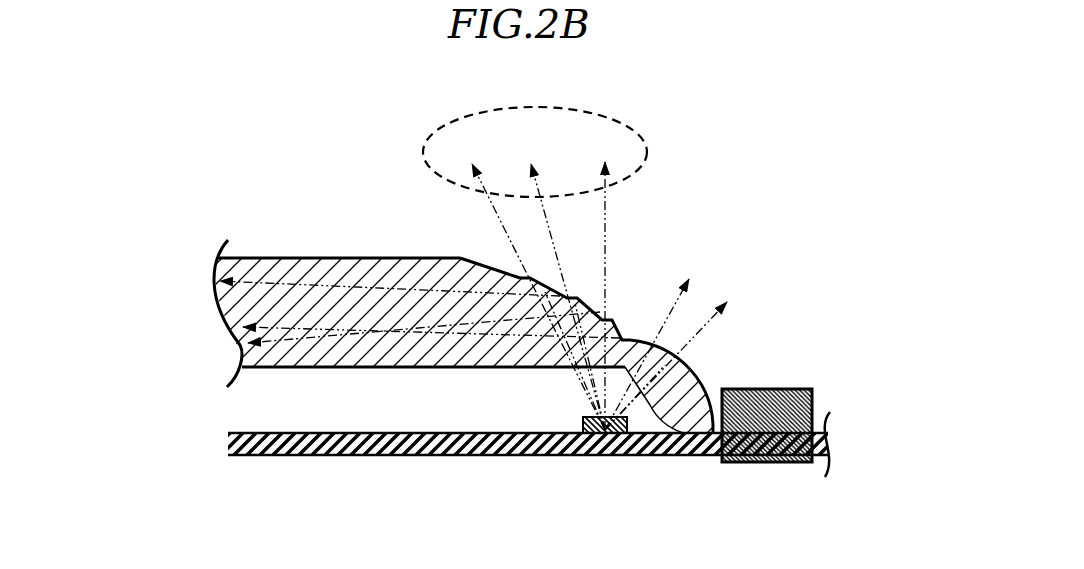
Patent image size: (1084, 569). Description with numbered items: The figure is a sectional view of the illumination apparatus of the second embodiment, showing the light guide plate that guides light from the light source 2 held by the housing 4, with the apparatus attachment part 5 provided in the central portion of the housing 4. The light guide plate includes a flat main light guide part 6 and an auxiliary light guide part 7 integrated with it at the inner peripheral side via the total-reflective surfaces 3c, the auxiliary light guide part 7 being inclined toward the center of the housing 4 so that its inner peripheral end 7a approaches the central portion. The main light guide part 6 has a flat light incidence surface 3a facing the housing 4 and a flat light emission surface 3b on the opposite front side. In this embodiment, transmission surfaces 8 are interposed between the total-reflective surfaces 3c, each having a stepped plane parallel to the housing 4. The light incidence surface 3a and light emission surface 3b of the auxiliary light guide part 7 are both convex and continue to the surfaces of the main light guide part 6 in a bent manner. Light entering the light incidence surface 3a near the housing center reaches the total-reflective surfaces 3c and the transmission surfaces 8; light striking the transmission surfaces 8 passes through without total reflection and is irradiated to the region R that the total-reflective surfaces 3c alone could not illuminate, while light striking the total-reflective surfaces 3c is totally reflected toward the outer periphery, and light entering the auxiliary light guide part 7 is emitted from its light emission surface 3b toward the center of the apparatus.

The light source 2 is at (603, 457).
The light incidence surface 3a is at (527, 367).
The light emission surface 3b is at (250, 258).
The total-reflective surface 3c is at (500, 268).
The housing 4 is at (433, 457).
The apparatus attachment part 5 is at (762, 434).
The main light guide part 6 is at (337, 280).
The auxiliary light guide part 7 is at (658, 423).
The inner peripheral end 7a is at (698, 434).
The transmission surface 8 is at (525, 278).
The region R is at (640, 122).